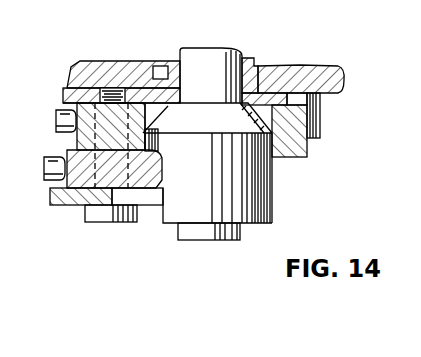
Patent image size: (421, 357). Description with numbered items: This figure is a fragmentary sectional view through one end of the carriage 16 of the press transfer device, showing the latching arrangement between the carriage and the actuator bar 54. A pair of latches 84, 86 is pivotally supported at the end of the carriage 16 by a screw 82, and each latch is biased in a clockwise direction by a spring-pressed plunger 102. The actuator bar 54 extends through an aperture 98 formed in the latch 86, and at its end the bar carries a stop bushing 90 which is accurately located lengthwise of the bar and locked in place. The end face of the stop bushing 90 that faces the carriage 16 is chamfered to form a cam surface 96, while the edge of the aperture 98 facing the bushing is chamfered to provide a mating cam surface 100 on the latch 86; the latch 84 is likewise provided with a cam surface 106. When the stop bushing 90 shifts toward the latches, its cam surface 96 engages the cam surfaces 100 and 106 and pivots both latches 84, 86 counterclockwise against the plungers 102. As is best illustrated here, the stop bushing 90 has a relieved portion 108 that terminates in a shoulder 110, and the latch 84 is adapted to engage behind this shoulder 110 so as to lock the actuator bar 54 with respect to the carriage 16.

The carriage 16 is at (320, 63).
The actuator bar 54 is at (228, 54).
The screw 82 is at (112, 225).
The latch 84 is at (153, 163).
The latch 86 is at (157, 122).
The stop bushing 90 is at (256, 203).
The cam surface 96 is at (247, 125).
The aperture 98 is at (154, 100).
The cam surface 100 is at (279, 158).
The spring-pressed plunger 102 is at (58, 112).
The cam surface 106 is at (157, 181).
The relieved portion 108 is at (163, 222).
The shoulder 110 is at (158, 150).